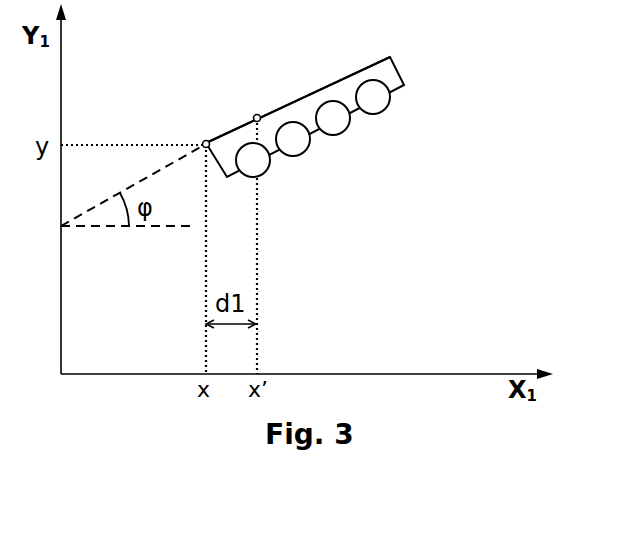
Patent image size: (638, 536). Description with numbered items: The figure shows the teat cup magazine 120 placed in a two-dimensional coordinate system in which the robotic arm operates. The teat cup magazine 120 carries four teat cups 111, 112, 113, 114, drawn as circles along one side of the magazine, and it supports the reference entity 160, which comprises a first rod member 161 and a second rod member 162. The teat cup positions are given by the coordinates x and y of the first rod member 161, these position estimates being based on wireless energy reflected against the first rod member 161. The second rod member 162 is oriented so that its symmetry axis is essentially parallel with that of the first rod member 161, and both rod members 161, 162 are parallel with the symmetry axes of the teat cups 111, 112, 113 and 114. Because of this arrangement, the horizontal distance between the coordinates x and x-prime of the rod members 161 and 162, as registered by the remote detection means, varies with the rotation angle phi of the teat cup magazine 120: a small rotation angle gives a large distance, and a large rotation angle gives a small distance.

The teat cup 111 is at (297, 200).
The teat cup 112 is at (345, 175).
The teat cup 113 is at (392, 149).
The teat cup 114 is at (429, 120).
The teat cup magazine 120 is at (348, 94).
The reference entity 160 is at (266, 100).
The first rod member 161 is at (169, 127).
The second rod member 162 is at (221, 70).